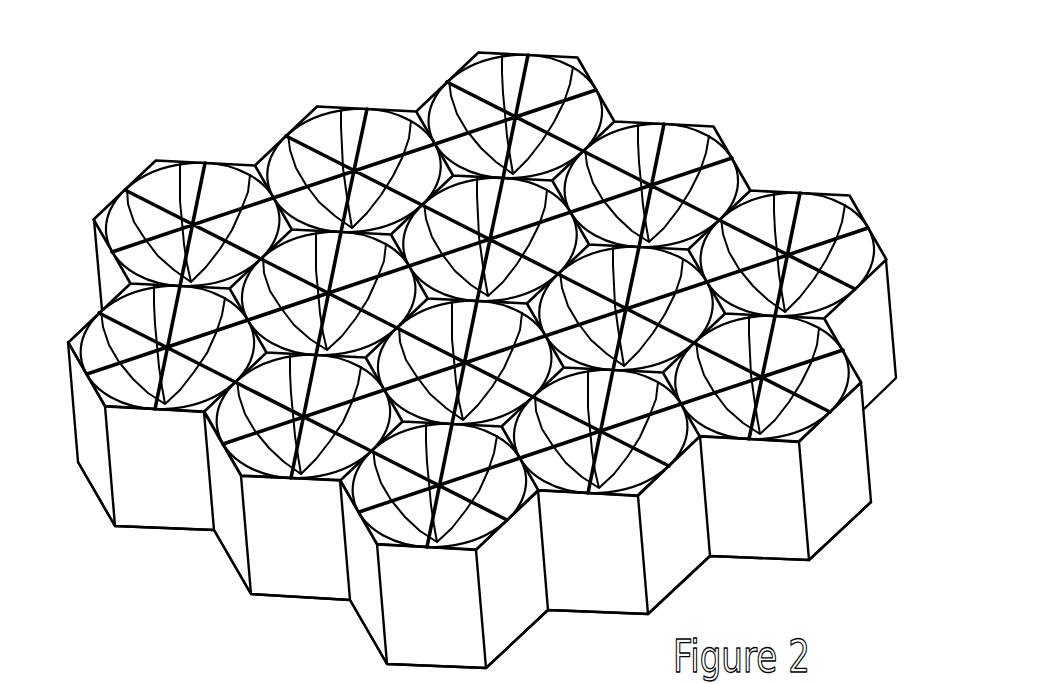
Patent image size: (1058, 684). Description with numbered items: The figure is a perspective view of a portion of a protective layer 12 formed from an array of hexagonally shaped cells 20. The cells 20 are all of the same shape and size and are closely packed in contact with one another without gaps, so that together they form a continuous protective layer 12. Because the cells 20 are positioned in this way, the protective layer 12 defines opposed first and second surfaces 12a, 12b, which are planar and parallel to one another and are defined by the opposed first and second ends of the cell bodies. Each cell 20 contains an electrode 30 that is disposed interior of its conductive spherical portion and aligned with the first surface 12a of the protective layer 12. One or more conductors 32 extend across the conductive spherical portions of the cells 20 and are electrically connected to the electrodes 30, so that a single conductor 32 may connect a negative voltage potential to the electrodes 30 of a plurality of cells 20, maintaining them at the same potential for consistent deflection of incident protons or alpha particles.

The protective layer 12 is at (477, 341).
The first surface 12a is at (577, 57).
The second surface 12b is at (160, 532).
The cell 20 is at (290, 577).
The electrode 30 is at (706, 144).
The conductor 32 is at (334, 120).